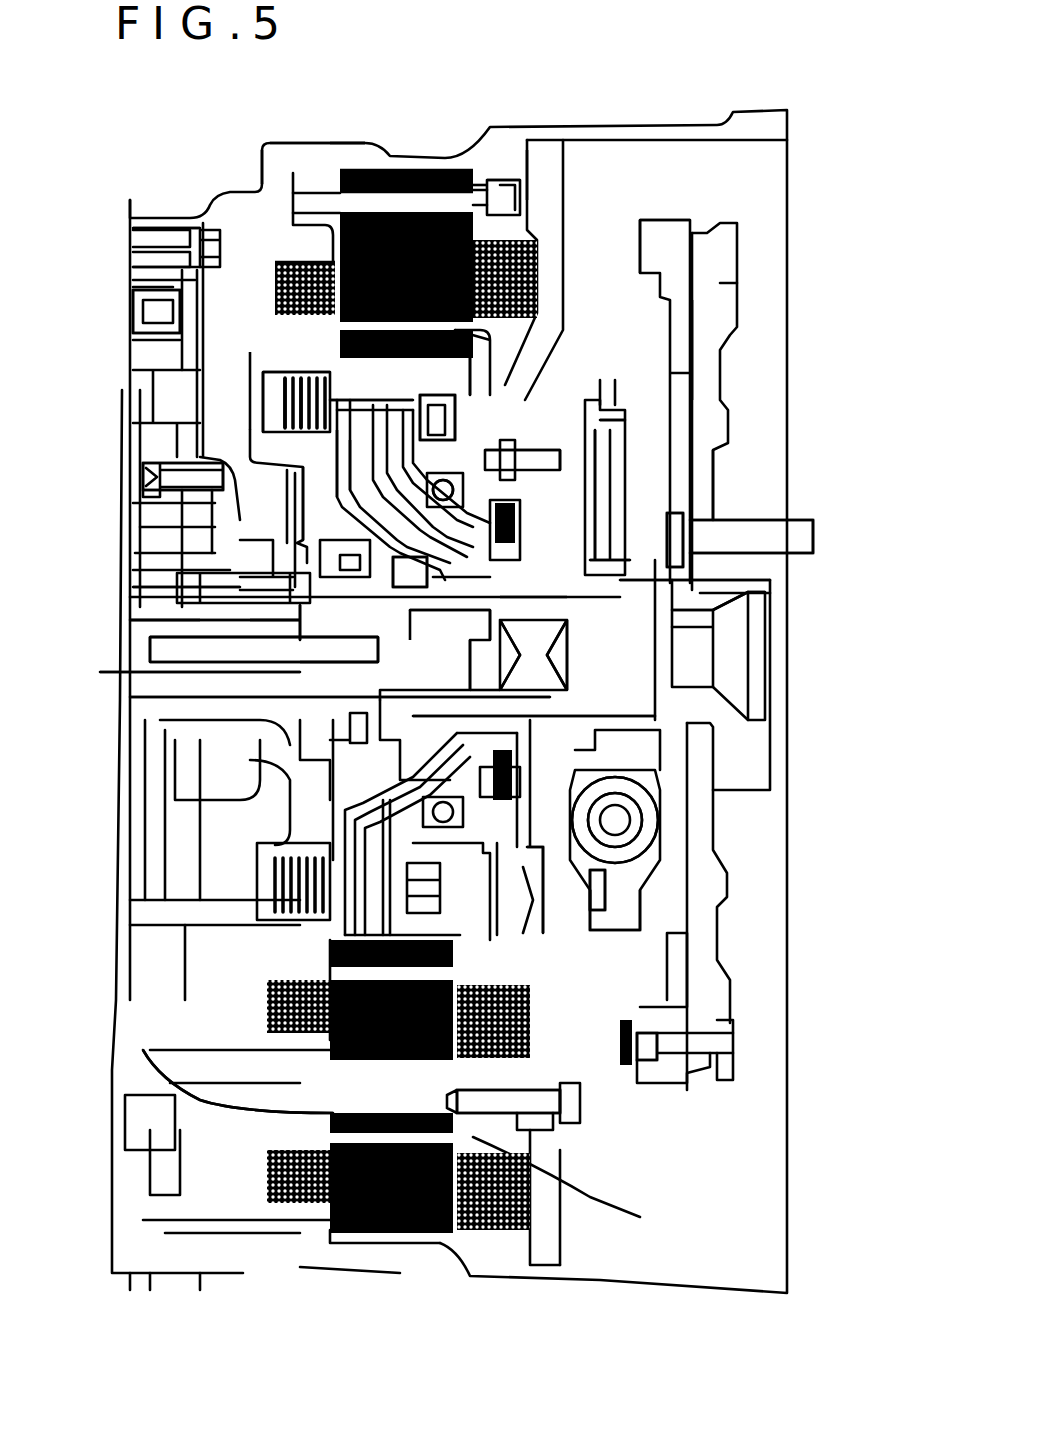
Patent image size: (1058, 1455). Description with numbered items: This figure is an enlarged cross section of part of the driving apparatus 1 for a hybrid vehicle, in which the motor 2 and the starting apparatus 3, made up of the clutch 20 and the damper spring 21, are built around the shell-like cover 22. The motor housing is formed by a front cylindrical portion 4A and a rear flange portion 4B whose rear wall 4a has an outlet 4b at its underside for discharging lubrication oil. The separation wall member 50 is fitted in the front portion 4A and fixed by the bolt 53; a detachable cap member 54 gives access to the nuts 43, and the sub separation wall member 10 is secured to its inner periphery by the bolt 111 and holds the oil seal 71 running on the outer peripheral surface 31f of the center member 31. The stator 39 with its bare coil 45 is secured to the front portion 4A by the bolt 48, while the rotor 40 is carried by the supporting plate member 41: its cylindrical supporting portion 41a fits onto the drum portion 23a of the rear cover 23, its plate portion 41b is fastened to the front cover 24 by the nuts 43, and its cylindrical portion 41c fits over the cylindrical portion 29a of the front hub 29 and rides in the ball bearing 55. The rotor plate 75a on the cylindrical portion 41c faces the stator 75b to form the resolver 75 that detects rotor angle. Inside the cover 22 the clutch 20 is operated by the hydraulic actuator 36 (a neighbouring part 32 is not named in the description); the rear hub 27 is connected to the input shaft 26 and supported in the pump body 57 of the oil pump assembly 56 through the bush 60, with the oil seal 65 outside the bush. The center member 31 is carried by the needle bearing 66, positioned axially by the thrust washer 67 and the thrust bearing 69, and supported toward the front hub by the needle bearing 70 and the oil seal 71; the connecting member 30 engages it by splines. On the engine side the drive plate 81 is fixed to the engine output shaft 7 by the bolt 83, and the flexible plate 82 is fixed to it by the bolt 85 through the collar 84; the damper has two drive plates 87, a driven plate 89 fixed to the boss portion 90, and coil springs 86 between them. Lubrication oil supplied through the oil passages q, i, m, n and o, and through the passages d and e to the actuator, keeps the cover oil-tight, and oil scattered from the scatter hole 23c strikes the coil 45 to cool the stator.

The driving apparatus 1 is at (302, 120).
The motor 2 is at (440, 168).
The starting apparatus 3 is at (318, 642).
The front cylindrical portion of the motor housing 4A is at (343, 143).
The rear flange portion of the motor housing 4B is at (267, 153).
The rear wall 4a is at (185, 337).
The outlet 4b is at (175, 1022).
The engine output shaft 7 is at (750, 515).
The sub separation wall member 10 is at (557, 470).
The clutch 20 is at (263, 392).
The damper spring 21 is at (667, 810).
The cover 22 is at (263, 375).
The rear cover 23 is at (268, 410).
The drum portion 23a is at (262, 348).
The scatter hole 23c is at (300, 372).
The front cover 24 is at (337, 455).
The input shaft 26 is at (160, 665).
The rear hub 27 is at (264, 628).
The front hub 29 is at (440, 683).
The cylindrical portion of the front hub 29a is at (522, 580).
The connecting member 30 is at (745, 420).
The center member 31 is at (713, 637).
The outer peripheral surface of the center member 31f is at (532, 713).
The piston 32 is at (333, 480).
The hydraulic actuator 36 is at (307, 470).
The stator 39 is at (405, 185).
The rotor 40 is at (473, 177).
The supporting plate member 41 is at (490, 347).
The supporting portion 41a is at (455, 395).
The plate portion 41b is at (350, 470).
The cylindrical portion 41c is at (512, 615).
The nut 43 is at (440, 412).
The coil 45 is at (280, 263).
The bolt 48 is at (487, 203).
The separation wall member 50 is at (547, 155).
The bolt 53 is at (560, 1087).
The cap member 54 is at (533, 933).
The ball bearing 55 is at (443, 478).
The oil pump assembly 56 is at (135, 472).
The pump body 57 is at (150, 505).
The bush 60 is at (240, 577).
The oil seal 65 is at (275, 628).
The needle bearing 66 is at (432, 612).
The thrust washer 67 is at (385, 600).
The thrust bearing 69 is at (385, 597).
The needle bearing 70 is at (495, 585).
The oil seal 71 is at (565, 582).
The resolver 75 is at (528, 530).
The rotor plate 75a is at (527, 560).
The stator 75b is at (533, 505).
The drive plate 81 is at (710, 363).
The flexible plate 82 is at (637, 290).
The bolt 83 is at (806, 538).
The collar 84 is at (670, 227).
The bolt 85 is at (622, 1062).
The coil spring 86 is at (647, 835).
The drive plate 87 is at (627, 913).
The driven plate 89 is at (607, 897).
The boss portion 90 is at (770, 588).
The bolt 111 is at (545, 450).
The oil passage d is at (170, 628).
The oil passage e is at (310, 624).
The oil passage i is at (213, 666).
The oil passage m is at (340, 690).
The oil passage n is at (412, 615).
The oil passage o is at (472, 615).
The oil passage q is at (128, 620).